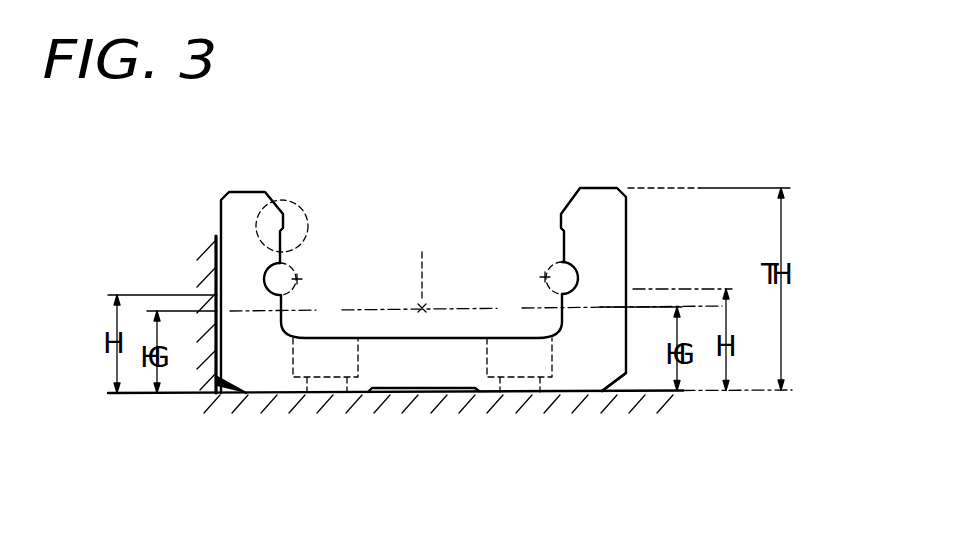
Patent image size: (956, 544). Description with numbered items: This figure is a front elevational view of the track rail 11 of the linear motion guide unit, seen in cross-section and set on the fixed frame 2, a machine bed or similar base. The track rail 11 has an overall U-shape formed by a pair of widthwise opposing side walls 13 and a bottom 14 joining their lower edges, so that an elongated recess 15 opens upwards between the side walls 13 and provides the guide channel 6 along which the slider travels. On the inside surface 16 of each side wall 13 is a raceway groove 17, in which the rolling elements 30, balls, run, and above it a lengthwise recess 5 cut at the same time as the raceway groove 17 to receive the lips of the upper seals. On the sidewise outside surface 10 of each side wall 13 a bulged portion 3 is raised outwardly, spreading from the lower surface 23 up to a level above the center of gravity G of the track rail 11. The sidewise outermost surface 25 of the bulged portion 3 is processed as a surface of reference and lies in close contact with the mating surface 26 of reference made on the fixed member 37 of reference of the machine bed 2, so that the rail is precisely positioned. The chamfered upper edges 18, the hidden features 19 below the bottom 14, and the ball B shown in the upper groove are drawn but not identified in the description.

The fixed frame 2 is at (390, 447).
The bulged portion 3 is at (220, 330).
The recess 5 is at (286, 232).
The guide channel 6 is at (390, 289).
The sidewise outside surface 10 is at (213, 249).
The track rail 11 is at (632, 191).
The side wall 13 is at (240, 222).
The bottom 14 is at (437, 382).
The elongated recess 15 is at (438, 337).
The inside surface 16 is at (288, 241).
The raceway groove 17 is at (270, 281).
The top edge chamfer 18 is at (245, 191).
The recess 19 is at (357, 358).
The lower surface 23 is at (582, 393).
The sidewise outermost surface 25 is at (216, 340).
The mating surface of reference 26 is at (217, 360).
The rolling elements 30 is at (303, 277).
The fixed member of reference 37 is at (210, 282).
The ball B is at (291, 203).
The center of gravity G is at (423, 267).